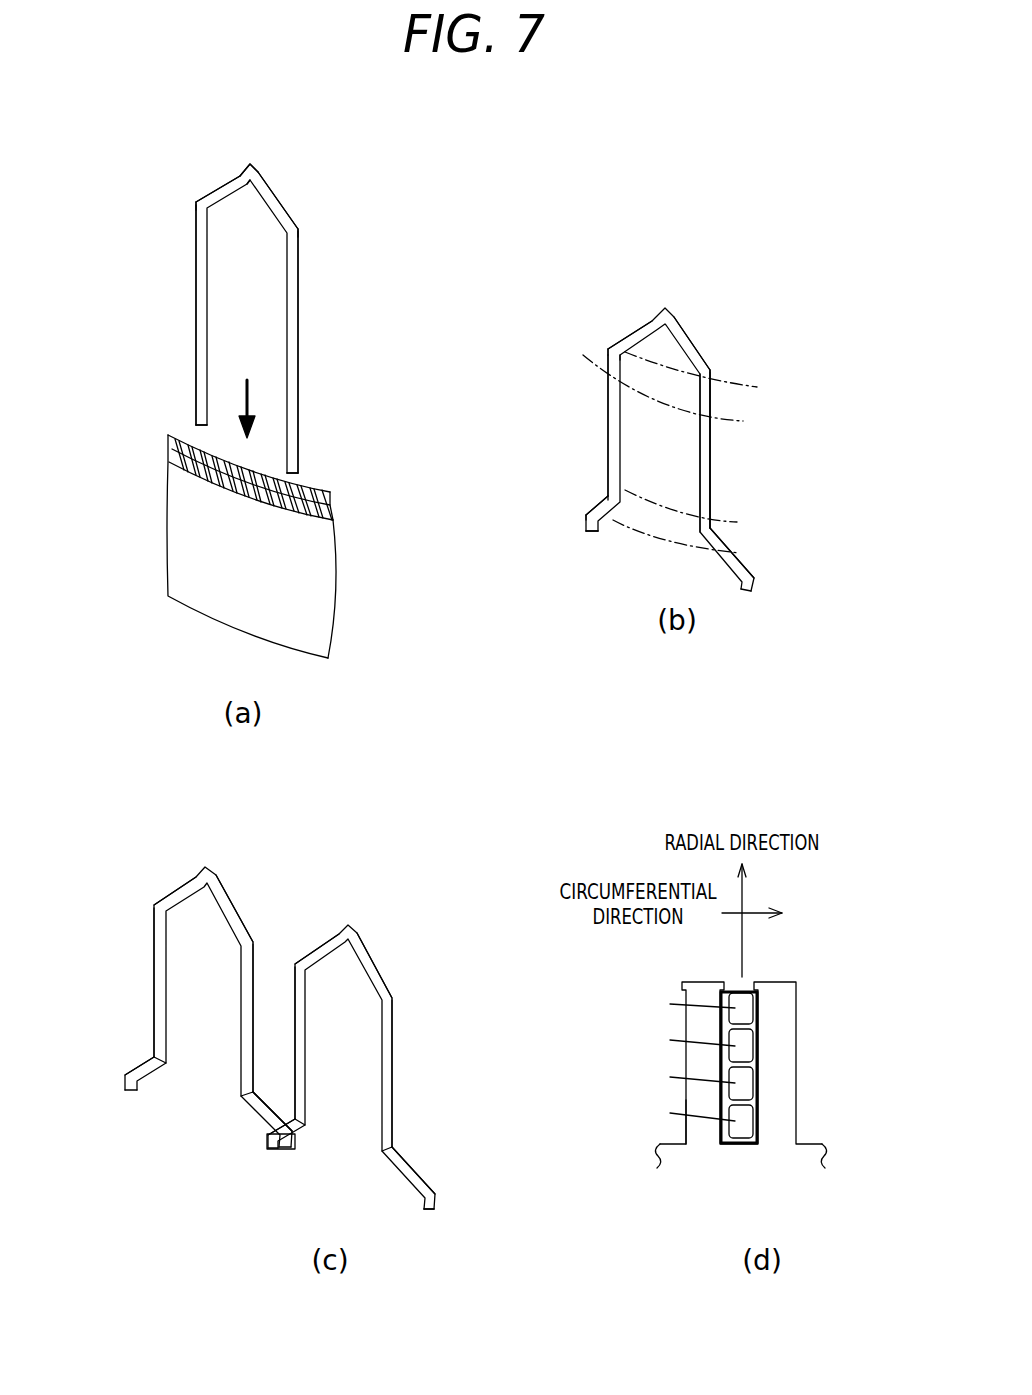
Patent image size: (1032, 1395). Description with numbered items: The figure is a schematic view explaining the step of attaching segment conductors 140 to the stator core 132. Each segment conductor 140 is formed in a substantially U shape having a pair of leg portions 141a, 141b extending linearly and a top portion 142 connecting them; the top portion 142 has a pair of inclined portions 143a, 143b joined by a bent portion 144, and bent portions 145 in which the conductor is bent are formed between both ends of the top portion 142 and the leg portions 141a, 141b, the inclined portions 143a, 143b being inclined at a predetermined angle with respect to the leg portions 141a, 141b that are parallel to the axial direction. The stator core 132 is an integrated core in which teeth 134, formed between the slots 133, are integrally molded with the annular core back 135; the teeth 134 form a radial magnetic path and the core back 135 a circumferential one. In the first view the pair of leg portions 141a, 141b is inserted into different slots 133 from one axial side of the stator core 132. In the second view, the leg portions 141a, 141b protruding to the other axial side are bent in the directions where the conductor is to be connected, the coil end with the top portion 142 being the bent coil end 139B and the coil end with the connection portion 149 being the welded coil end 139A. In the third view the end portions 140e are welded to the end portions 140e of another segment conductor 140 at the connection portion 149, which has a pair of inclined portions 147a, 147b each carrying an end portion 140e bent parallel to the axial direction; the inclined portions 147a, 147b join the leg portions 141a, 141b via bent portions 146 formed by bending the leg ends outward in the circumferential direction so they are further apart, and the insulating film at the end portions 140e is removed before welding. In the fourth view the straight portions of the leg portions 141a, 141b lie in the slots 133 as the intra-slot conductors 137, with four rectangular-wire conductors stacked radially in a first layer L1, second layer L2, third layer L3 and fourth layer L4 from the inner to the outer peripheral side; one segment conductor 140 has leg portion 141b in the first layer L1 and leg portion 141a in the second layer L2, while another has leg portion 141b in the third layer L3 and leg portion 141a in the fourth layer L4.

The stator core 132 is at (240, 615).
The slot 133 is at (317, 488).
The tooth 134 is at (778, 1133).
The core back 135 is at (660, 1150).
The intra-slot conductor 137 is at (718, 388).
The welded coil end 139A is at (574, 497).
The bent coil end 139B is at (602, 312).
The segment conductor 140 is at (313, 212).
The end portion 140e is at (203, 423).
The leg portion 141a is at (195, 335).
The leg portion 141b is at (292, 307).
The top portion 142 is at (222, 178).
The inclined portion 143a is at (215, 188).
The inclined portion 143b is at (280, 197).
The bent portion 144 is at (248, 170).
The bent portion 145 is at (195, 201).
The bent portion 146 is at (162, 1060).
The inclined portion 147a is at (605, 503).
The inclined portion 147b is at (728, 545).
The connection portion 149 is at (255, 1131).
The first layer L1 is at (760, 1007).
The second layer L2 is at (760, 1047).
The third layer L3 is at (760, 1084).
The fourth layer L4 is at (760, 1122).